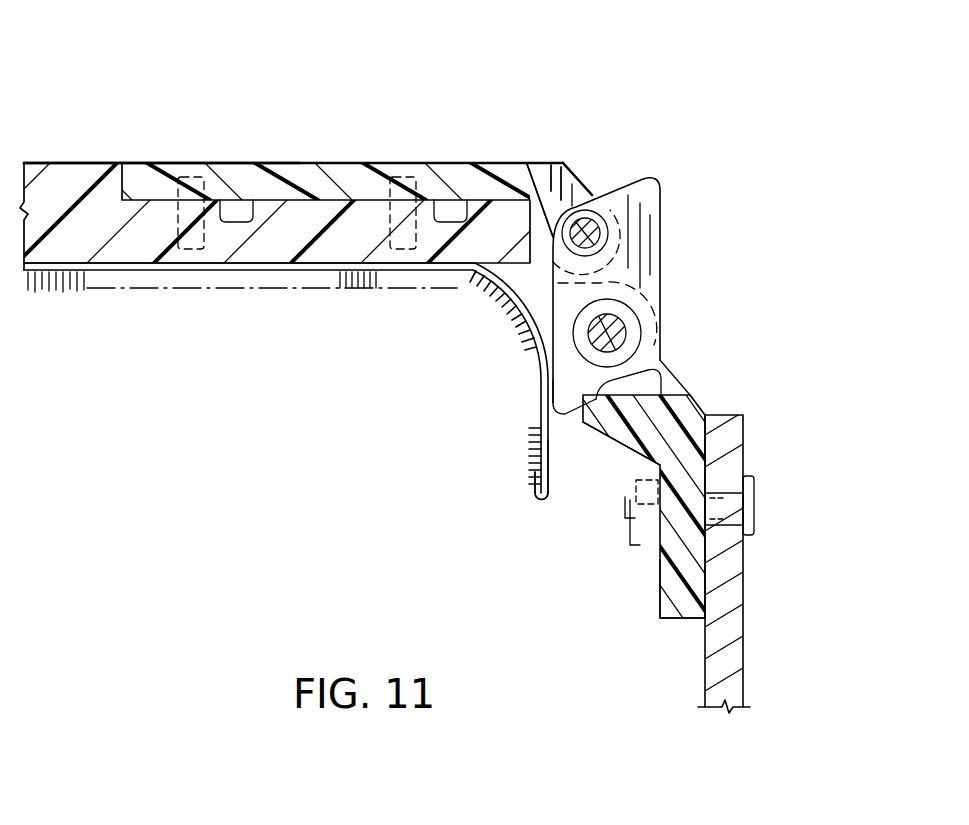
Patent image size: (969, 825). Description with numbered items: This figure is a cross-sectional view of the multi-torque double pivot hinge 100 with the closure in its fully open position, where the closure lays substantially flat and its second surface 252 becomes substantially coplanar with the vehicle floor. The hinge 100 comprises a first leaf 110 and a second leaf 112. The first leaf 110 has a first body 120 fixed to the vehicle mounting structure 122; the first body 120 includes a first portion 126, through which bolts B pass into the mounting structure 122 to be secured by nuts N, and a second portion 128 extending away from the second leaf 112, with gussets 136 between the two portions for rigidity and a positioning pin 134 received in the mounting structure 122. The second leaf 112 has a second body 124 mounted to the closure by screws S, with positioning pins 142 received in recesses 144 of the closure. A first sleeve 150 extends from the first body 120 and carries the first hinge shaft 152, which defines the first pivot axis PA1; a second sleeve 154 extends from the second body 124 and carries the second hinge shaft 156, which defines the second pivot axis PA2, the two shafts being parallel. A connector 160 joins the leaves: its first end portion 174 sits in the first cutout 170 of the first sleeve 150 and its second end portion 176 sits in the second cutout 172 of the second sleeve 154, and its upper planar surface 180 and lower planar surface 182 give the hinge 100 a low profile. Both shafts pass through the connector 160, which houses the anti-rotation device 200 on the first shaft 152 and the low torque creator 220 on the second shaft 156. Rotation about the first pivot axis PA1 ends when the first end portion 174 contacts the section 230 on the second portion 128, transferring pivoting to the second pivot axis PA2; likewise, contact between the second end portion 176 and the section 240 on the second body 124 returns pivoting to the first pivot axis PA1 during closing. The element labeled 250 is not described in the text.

The multi-torque double pivot hinge 100 is at (744, 160).
The first leaf 110 is at (680, 622).
The second leaf 112 is at (302, 160).
The first body 120 is at (688, 458).
The mounting structure 122 is at (732, 662).
The second body 124 is at (353, 162).
The first portion 126 is at (663, 588).
The second portion 128 is at (612, 425).
The positioning pin 134 is at (724, 510).
The gusset 136 is at (627, 470).
The positioning pin 142 is at (240, 216).
The recess 144 is at (460, 212).
The first sleeve 150 is at (510, 305).
The first hinge shaft 152 is at (570, 380).
The second sleeve 154 is at (584, 222).
The second hinge shaft 156 is at (582, 225).
The connector 160 is at (670, 240).
The first cutout 170 is at (676, 394).
The second cutout 172 is at (563, 161).
The first end portion 174 is at (560, 415).
The second end portion 176 is at (642, 188).
The upper planar surface 180 is at (527, 320).
The lower planar surface 182 is at (666, 298).
The anti-rotation device 200 is at (625, 333).
The low torque creator 220 is at (600, 233).
The section 230 is at (652, 386).
The section 240 is at (402, 172).
The clip teeth 250 is at (75, 292).
The second surface 252 is at (85, 161).
The bolt B is at (757, 490).
The nut N is at (637, 537).
The screw S is at (188, 172).
The first pivot axis PA1 is at (605, 333).
The second pivot axis PA2 is at (592, 238).